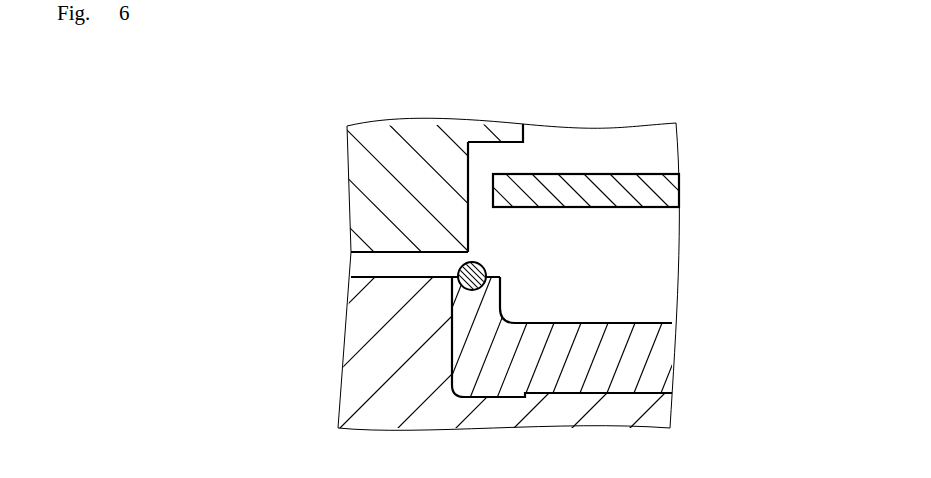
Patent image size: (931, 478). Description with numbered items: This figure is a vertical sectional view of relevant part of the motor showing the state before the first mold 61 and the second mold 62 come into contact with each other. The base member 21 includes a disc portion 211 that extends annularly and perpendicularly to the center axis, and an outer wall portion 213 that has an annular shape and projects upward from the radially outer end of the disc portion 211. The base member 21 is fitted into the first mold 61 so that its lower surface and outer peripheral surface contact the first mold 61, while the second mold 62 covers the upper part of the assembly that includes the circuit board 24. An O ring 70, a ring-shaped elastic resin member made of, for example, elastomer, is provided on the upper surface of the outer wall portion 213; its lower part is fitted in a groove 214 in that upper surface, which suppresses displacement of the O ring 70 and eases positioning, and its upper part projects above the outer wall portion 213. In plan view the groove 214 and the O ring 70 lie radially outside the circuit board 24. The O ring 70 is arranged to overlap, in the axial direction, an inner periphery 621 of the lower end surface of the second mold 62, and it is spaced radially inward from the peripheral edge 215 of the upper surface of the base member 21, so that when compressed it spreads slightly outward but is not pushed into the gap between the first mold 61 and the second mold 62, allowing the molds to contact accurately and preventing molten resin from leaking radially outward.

The base member 21 is at (633, 302).
The disc portion 211 is at (585, 358).
The outer wall portion 213 is at (474, 300).
The groove 214 is at (464, 263).
The peripheral edge 215 is at (457, 274).
The circuit board 24 is at (600, 190).
The first mold 61 is at (395, 345).
The second mold 62 is at (402, 193).
The inner periphery of the lower end surface of the second mold 621 is at (472, 262).
The O ring 70 is at (484, 266).